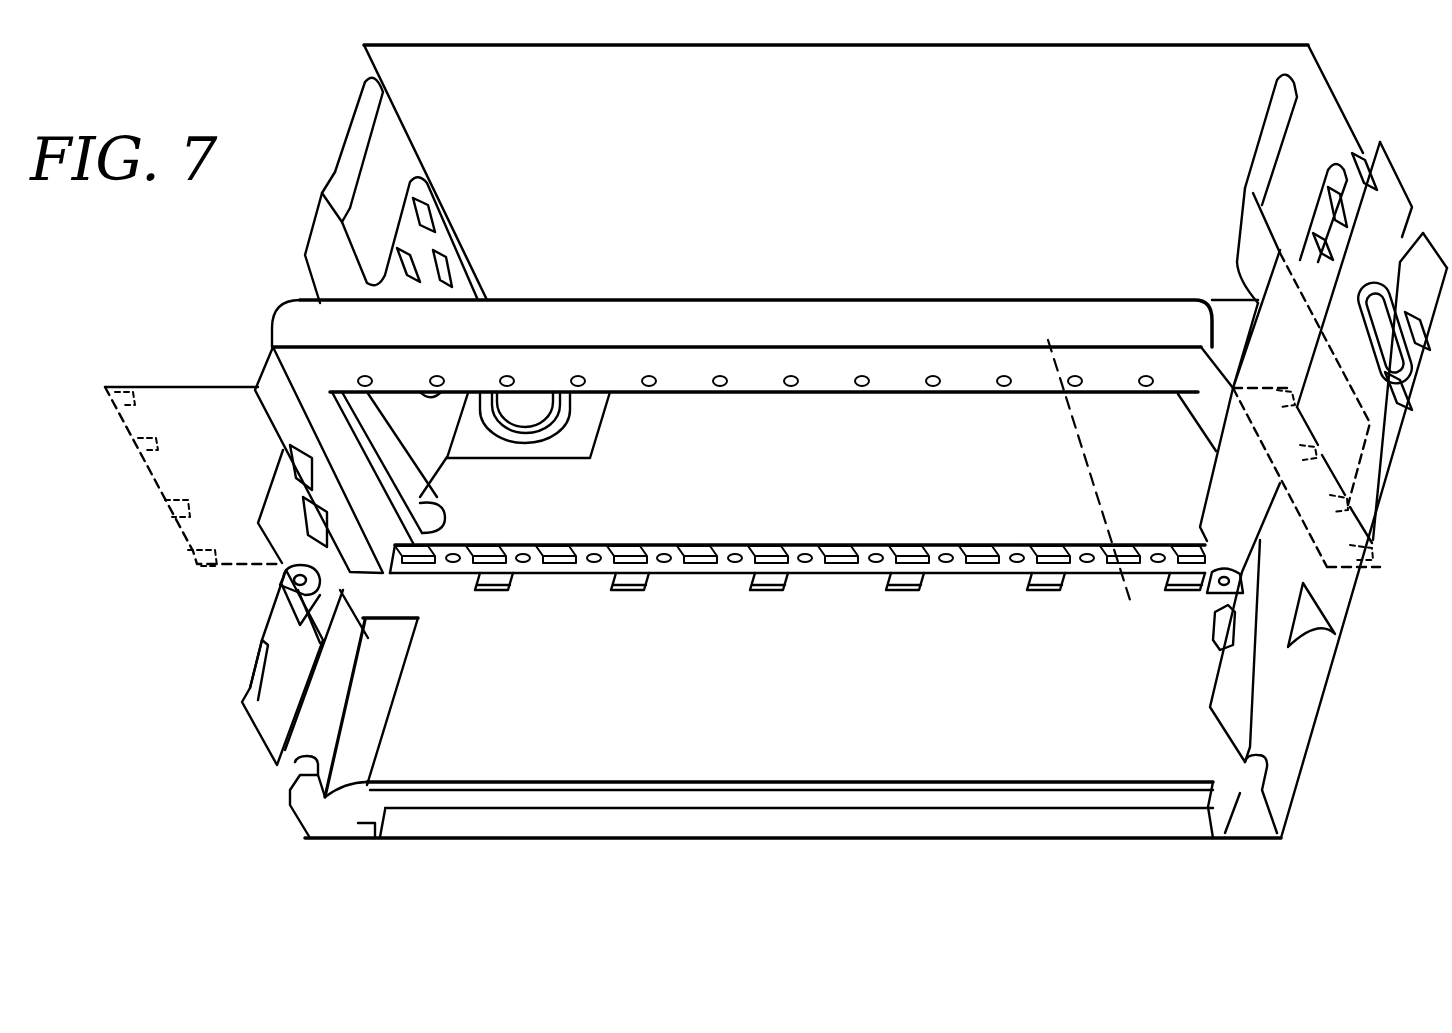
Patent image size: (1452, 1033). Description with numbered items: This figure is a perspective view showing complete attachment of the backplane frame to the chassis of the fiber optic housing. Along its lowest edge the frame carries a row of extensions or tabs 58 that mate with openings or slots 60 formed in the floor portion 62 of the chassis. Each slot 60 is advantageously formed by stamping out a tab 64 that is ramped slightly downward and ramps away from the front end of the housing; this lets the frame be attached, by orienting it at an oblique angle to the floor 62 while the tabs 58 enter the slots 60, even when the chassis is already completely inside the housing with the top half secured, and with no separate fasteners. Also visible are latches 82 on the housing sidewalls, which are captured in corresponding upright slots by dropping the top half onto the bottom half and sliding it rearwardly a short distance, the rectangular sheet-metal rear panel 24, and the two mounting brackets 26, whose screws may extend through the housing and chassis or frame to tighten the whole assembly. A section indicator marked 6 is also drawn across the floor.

The rear panel 24 is at (869, 158).
The mounting bracket 26 is at (205, 385).
The tab 58 is at (643, 575).
The slot 60 is at (884, 578).
The floor portion 62 is at (730, 715).
The tab 64 is at (632, 588).
The latch 82 is at (305, 585).
The section view indicator 6 is at (1060, 326).